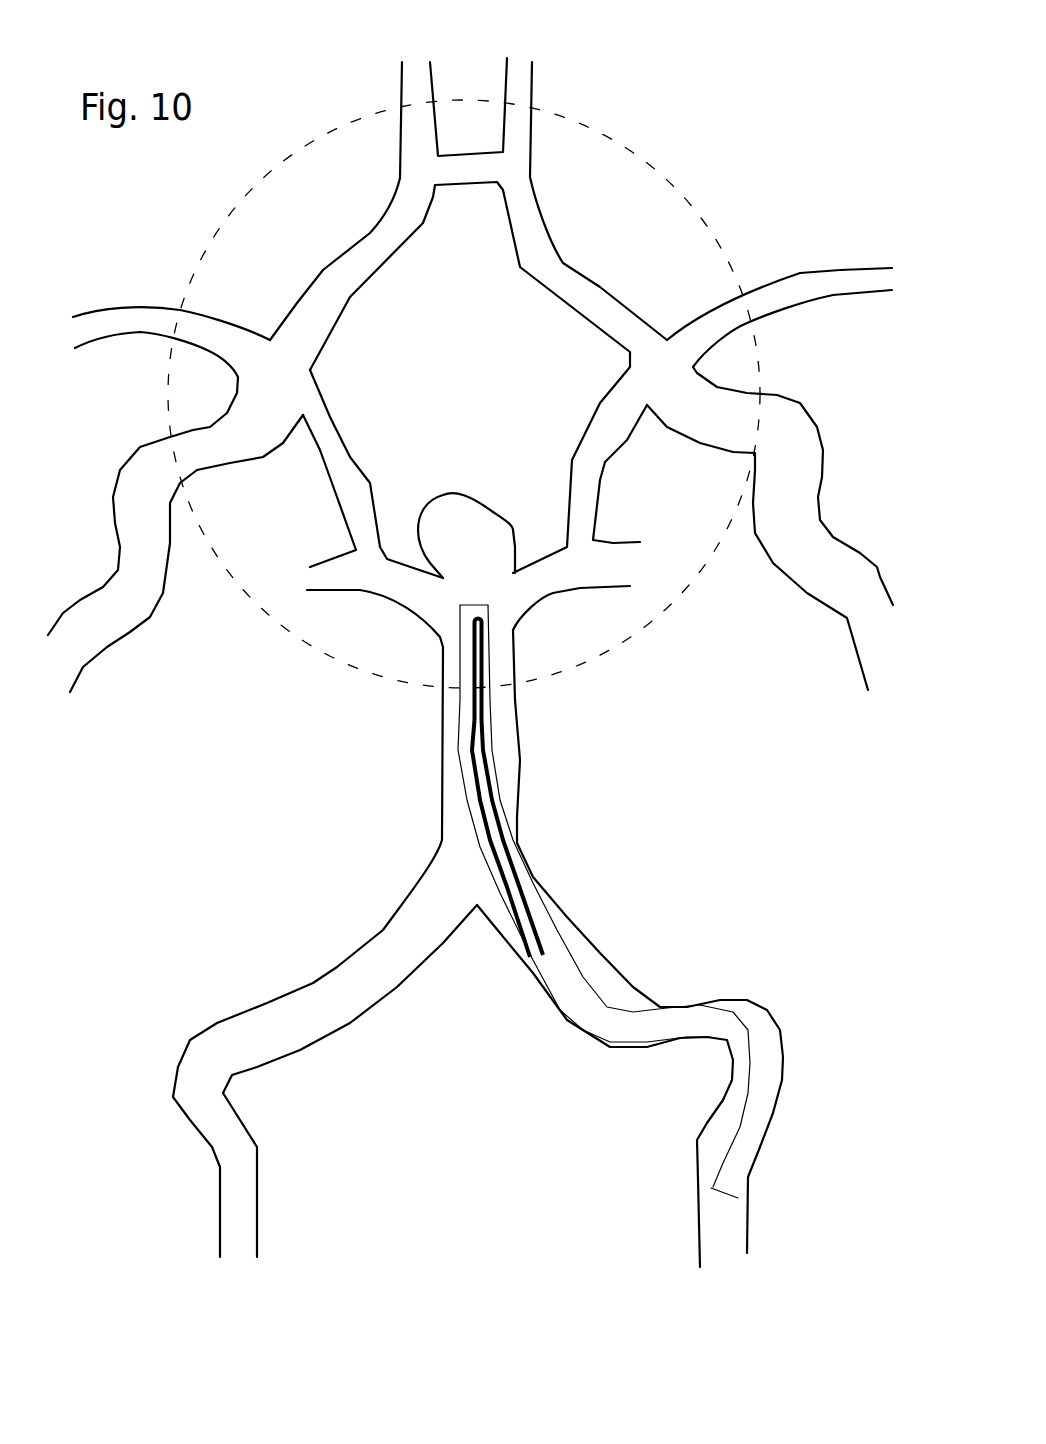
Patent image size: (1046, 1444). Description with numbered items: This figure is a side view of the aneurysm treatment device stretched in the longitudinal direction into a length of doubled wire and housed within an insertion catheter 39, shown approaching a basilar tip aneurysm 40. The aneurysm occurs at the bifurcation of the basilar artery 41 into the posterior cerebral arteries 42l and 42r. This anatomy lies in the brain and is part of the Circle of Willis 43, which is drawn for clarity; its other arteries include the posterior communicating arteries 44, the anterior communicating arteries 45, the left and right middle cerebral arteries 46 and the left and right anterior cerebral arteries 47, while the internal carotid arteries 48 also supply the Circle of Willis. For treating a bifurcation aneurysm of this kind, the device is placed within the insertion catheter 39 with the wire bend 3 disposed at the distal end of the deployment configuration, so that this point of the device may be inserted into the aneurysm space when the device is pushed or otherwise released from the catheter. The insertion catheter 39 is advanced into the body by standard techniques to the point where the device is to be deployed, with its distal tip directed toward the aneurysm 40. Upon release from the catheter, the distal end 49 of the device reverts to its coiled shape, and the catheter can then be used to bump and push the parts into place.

The wire bend 3 is at (458, 622).
The insertion catheter 39 is at (557, 957).
The basilar tip aneurysm 40 is at (457, 495).
The basilar artery 41 is at (520, 790).
The left posterior cerebral artery 42l is at (342, 607).
The right posterior cerebral artery 42r is at (580, 593).
The Circle of Willis 43 is at (636, 150).
The posterior communicating arteries 44 is at (338, 505).
The anterior communicating arteries 45 is at (453, 148).
The left and right middle cerebral arteries 46 is at (145, 302).
The left and right anterior cerebral arteries 47 is at (403, 85).
The internal carotid arteries 48 is at (127, 638).
The distal end of the device 49 is at (487, 690).